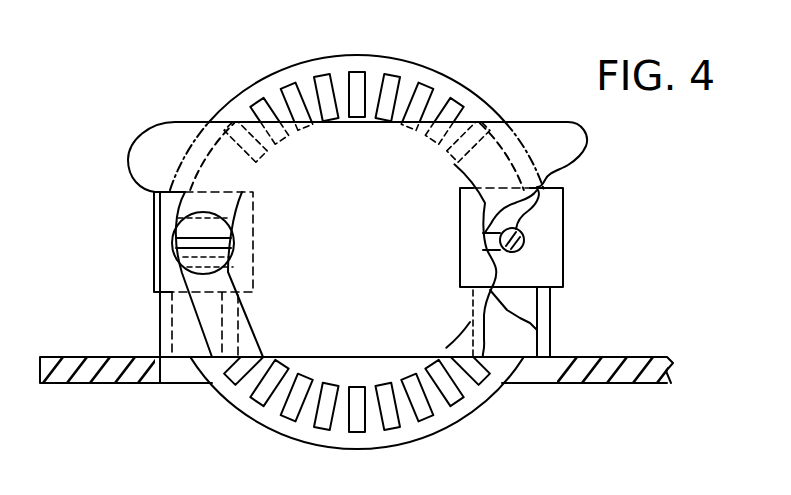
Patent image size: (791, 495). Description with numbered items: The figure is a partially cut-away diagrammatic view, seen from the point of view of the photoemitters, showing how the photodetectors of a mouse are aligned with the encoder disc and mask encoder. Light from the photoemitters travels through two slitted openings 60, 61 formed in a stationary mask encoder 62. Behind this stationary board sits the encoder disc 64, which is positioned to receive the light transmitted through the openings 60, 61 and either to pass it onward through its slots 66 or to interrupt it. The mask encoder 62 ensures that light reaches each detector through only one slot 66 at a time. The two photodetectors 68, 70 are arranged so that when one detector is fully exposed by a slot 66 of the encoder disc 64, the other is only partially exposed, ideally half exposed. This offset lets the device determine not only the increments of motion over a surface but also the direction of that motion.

The slitted opening 60 is at (498, 238).
The slitted opening 61 is at (233, 243).
The stationary mask encoder 62 is at (135, 150).
The encoder disc 64 is at (486, 93).
The slots 66 is at (291, 92).
The photodetector 68 is at (562, 246).
The photodetector 70 is at (155, 205).